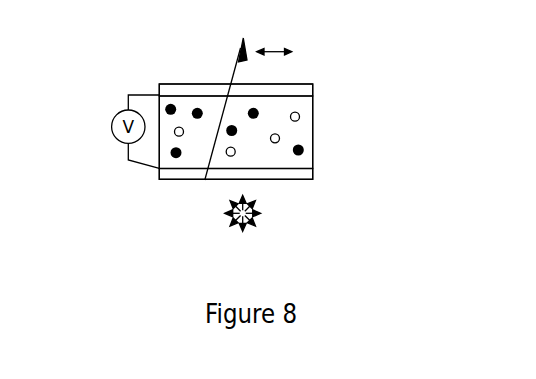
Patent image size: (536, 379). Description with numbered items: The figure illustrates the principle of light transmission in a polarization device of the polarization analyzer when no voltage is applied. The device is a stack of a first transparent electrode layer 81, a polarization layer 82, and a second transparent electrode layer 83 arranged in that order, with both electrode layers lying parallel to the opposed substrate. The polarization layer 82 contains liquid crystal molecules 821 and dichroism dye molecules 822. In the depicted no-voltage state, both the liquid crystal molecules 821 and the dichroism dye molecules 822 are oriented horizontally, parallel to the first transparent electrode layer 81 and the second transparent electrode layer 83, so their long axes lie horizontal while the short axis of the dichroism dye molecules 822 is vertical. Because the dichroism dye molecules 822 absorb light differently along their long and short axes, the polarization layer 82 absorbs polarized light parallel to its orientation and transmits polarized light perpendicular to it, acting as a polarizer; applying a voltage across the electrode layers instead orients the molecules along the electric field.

The first transparent electrode layer 81 is at (312, 91).
The polarization layer 82 is at (306, 132).
The second transparent electrode layer 83 is at (308, 172).
The liquid crystal molecules 821 is at (171, 105).
The dichroism dye molecules 822 is at (182, 128).